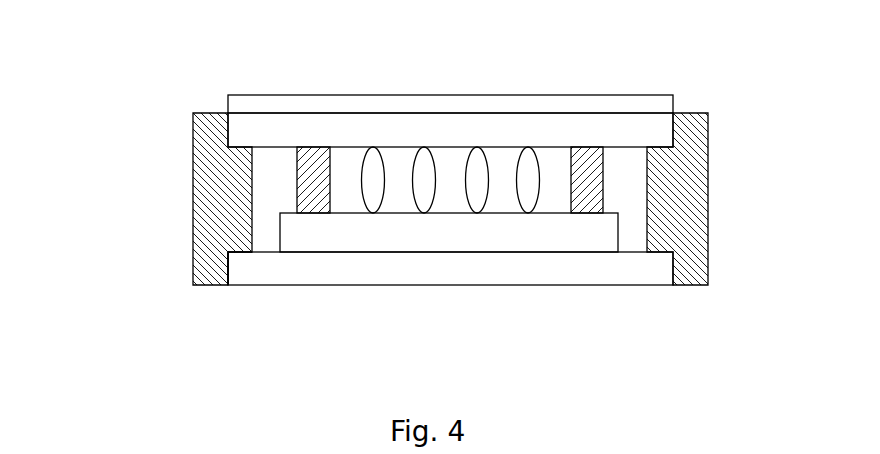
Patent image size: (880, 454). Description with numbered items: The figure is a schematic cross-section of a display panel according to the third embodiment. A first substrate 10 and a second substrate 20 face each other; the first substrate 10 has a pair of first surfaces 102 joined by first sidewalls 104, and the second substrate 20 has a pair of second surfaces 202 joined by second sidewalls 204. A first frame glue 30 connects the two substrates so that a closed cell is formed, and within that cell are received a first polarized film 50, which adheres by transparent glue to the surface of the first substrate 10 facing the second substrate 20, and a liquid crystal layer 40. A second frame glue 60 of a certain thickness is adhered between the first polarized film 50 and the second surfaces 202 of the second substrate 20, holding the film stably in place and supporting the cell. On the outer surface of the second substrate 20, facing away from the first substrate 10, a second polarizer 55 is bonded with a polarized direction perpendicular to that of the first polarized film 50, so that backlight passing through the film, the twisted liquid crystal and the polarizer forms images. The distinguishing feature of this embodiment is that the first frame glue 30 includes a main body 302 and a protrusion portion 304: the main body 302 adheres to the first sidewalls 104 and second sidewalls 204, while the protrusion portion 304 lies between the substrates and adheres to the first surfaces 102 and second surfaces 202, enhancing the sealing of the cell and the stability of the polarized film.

The first substrate 10 is at (532, 270).
The second substrate 20 is at (521, 128).
The first frame glue 30 is at (95, 91).
The liquid crystal layer 40 is at (373, 158).
The first polarized film 50 is at (380, 242).
The second polarizer 55 is at (450, 103).
The second frame glue 60 is at (300, 152).
The first surfaces 102 is at (227, 252).
The first sidewalls 104 is at (227, 263).
The second surfaces 202 is at (673, 112).
The second sidewalls 204 is at (673, 128).
The main body 302 is at (222, 168).
The protrusion portion 304 is at (240, 200).